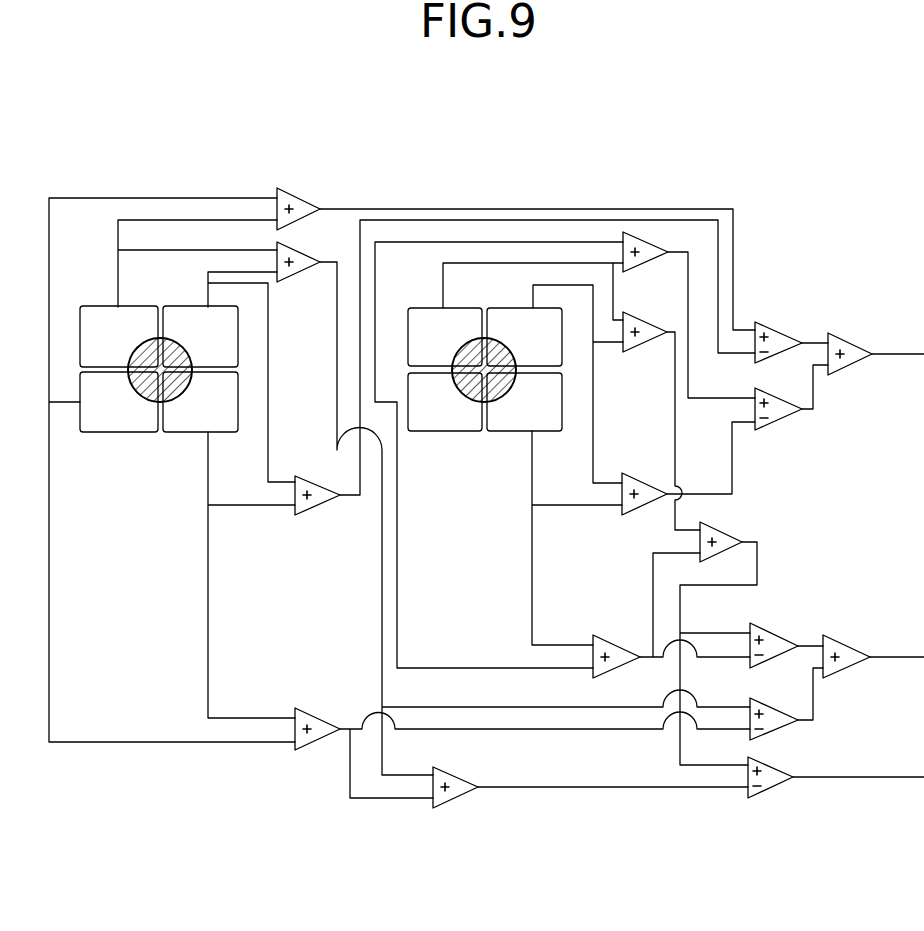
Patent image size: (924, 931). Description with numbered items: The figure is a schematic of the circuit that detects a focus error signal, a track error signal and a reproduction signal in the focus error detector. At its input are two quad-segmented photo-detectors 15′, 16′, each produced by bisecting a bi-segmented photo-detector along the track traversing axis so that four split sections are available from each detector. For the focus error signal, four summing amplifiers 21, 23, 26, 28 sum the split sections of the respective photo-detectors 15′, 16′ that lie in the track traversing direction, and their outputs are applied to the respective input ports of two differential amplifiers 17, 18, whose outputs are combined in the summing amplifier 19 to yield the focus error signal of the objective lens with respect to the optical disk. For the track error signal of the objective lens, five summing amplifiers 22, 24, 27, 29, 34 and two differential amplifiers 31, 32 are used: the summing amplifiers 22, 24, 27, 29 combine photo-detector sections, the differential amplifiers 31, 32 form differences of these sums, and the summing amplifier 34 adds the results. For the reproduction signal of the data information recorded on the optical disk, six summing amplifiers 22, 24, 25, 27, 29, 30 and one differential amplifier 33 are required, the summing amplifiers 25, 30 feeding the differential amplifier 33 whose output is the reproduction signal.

The quad-segmented photo-detector 15′ is at (140, 437).
The quad-segmented photo-detector 16′ is at (475, 437).
The differential amplifier 17 is at (775, 330).
The differential amplifier 18 is at (780, 425).
The summing amplifier 19 is at (850, 340).
The summing amplifier 21 is at (306, 196).
The summing amplifier 22 is at (295, 283).
The summing amplifier 23 is at (318, 510).
The summing amplifier 24 is at (312, 748).
The summing amplifier 25 is at (465, 798).
The summing amplifier 26 is at (648, 240).
The summing amplifier 27 is at (645, 350).
The summing amplifier 28 is at (637, 510).
The summing amplifier 29 is at (593, 638).
The summing amplifier 30 is at (732, 538).
The differential amplifier 31 is at (775, 632).
The differential amplifier 32 is at (783, 733).
The differential amplifier 33 is at (778, 790).
The summing amplifier 34 is at (858, 645).